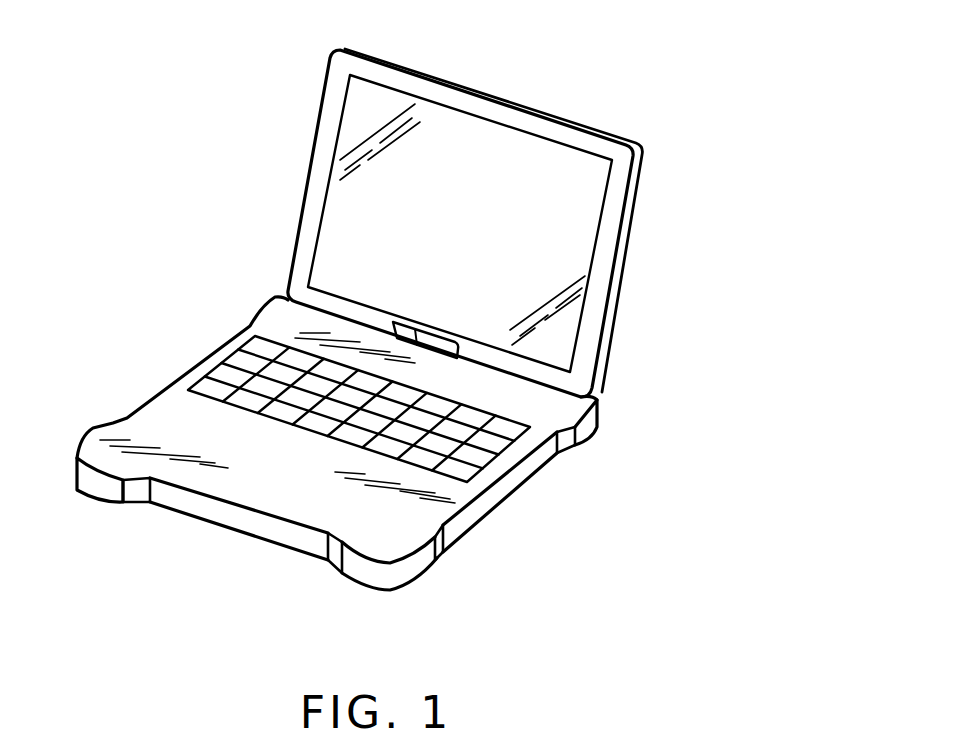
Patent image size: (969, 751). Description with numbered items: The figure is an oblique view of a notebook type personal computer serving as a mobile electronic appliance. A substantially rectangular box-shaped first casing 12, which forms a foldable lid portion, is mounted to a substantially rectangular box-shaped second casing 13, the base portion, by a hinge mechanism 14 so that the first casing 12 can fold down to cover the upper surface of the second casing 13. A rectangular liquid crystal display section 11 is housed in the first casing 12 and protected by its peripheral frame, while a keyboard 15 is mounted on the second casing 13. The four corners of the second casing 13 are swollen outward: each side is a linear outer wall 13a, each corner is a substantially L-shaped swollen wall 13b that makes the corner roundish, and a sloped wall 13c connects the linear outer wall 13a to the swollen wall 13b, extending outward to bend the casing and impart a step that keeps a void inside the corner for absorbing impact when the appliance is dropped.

The liquid crystal display section 11 is at (453, 108).
The first casing 12 is at (547, 130).
The second casing 13 is at (172, 415).
The linear outer wall 13a is at (240, 523).
The swollen wall 13b is at (265, 293).
The sloped wall 13c is at (238, 326).
The hinge mechanism 14 is at (417, 327).
The keyboard 15 is at (240, 362).